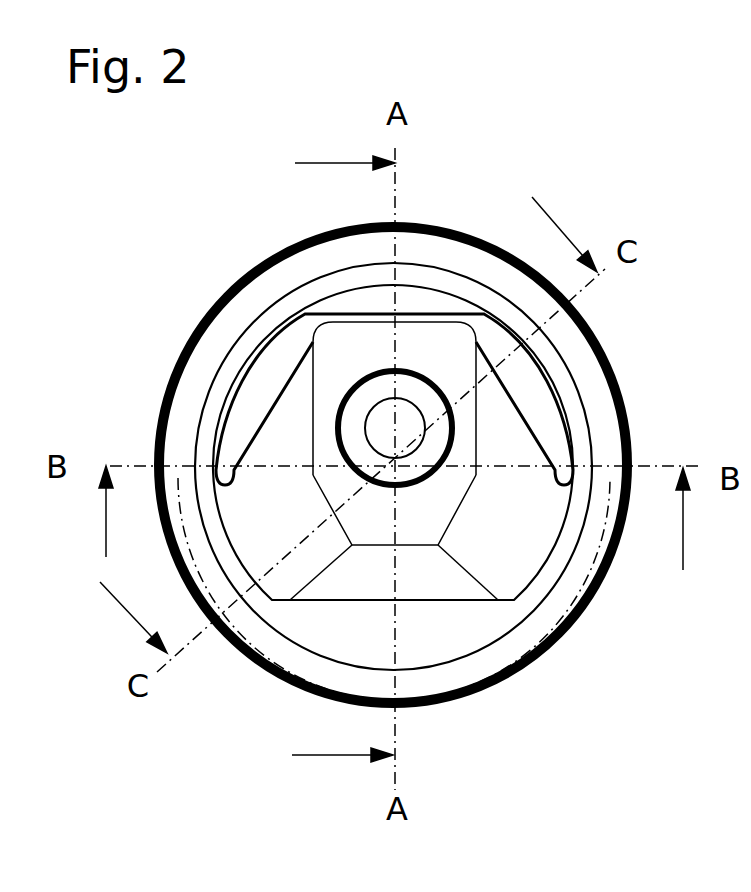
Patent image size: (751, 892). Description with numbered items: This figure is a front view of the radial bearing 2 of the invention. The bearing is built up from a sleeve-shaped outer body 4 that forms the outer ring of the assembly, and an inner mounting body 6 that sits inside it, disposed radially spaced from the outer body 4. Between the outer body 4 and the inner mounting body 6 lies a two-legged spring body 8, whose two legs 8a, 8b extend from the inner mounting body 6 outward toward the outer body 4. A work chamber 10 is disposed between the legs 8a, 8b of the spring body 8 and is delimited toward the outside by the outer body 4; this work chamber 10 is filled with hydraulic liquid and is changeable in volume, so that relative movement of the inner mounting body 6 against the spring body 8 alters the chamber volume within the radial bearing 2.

The radial bearing 2 is at (204, 732).
The sleeve-shaped outer body 4 is at (203, 315).
The inner mounting body 6 is at (432, 352).
The two-legged spring body 8 is at (245, 412).
The leg of the spring body 8a is at (292, 531).
The leg of the spring body 8b is at (531, 543).
The work chamber 10 is at (456, 633).